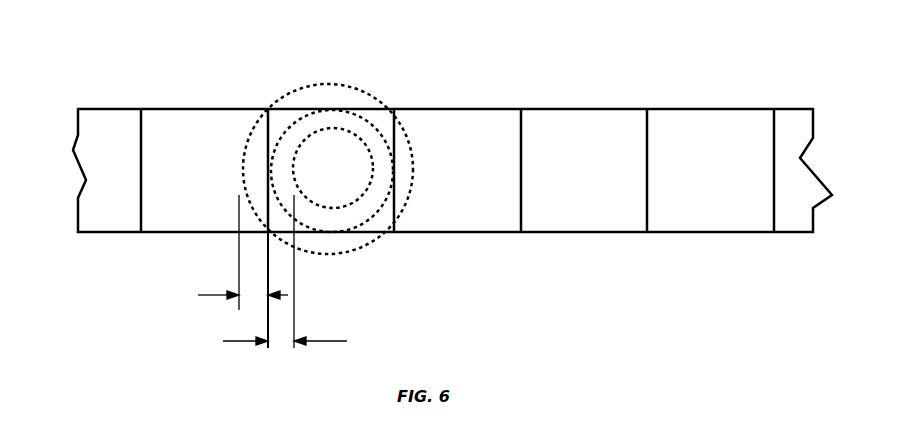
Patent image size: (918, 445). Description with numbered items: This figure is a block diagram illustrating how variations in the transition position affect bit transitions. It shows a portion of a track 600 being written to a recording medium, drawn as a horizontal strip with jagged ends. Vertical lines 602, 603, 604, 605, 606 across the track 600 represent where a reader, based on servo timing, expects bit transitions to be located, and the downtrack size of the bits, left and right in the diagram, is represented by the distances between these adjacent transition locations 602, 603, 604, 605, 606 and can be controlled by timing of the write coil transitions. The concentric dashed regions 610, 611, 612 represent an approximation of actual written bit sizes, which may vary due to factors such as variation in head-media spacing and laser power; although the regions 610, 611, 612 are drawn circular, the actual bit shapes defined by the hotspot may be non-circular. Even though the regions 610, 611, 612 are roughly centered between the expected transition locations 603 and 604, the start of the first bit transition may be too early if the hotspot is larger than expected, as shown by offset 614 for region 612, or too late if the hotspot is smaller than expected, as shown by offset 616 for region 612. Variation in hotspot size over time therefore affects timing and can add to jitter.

The track 600 is at (96, 232).
The expected bit transition location 602 is at (141, 116).
The expected bit transition location 603 is at (268, 118).
The expected bit transition location 604 is at (394, 112).
The expected bit transition location 605 is at (521, 118).
The expected bit transition location 606 is at (647, 116).
The region 610 is at (367, 248).
The region 611 is at (337, 85).
The region 612 is at (328, 208).
The offset 614 is at (225, 271).
The offset 616 is at (303, 273).